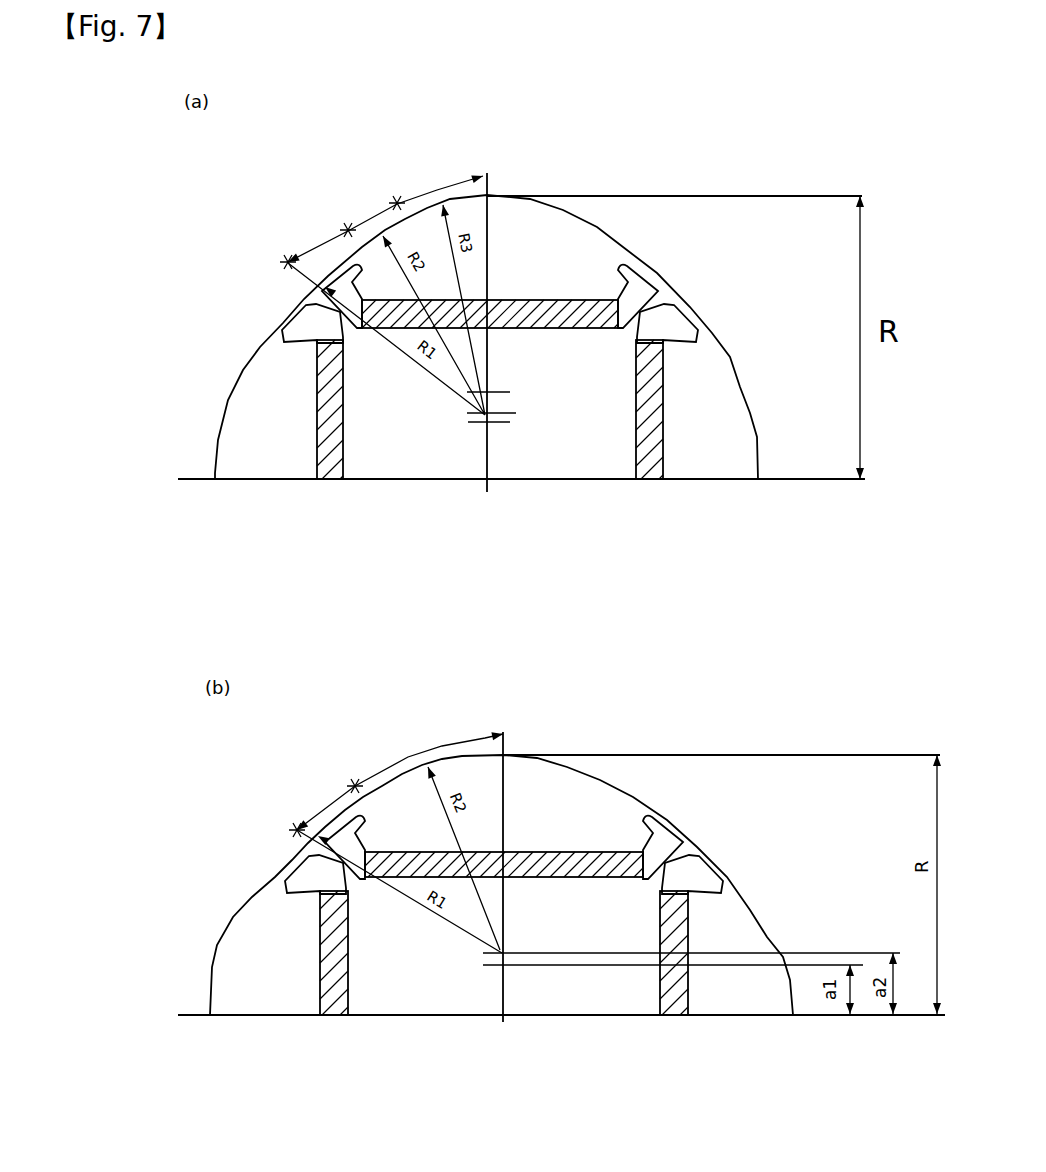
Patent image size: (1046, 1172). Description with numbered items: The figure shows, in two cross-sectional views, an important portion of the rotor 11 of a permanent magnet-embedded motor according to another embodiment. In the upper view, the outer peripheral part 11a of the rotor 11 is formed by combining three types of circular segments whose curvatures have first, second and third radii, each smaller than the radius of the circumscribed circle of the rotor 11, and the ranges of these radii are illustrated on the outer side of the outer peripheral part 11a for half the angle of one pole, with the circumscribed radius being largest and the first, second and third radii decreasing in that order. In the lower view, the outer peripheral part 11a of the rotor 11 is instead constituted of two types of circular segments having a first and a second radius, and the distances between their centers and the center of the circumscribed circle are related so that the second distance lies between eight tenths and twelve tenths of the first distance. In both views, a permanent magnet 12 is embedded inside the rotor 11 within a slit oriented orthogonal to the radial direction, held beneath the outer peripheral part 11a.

The rotor 11 is at (577, 247).
The outer peripheral part 11a is at (438, 195).
The permanent magnet 12 is at (630, 270).